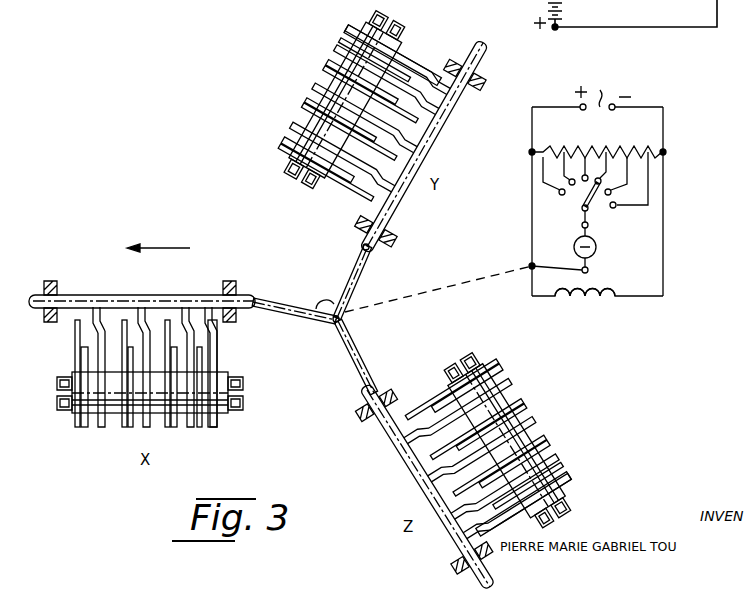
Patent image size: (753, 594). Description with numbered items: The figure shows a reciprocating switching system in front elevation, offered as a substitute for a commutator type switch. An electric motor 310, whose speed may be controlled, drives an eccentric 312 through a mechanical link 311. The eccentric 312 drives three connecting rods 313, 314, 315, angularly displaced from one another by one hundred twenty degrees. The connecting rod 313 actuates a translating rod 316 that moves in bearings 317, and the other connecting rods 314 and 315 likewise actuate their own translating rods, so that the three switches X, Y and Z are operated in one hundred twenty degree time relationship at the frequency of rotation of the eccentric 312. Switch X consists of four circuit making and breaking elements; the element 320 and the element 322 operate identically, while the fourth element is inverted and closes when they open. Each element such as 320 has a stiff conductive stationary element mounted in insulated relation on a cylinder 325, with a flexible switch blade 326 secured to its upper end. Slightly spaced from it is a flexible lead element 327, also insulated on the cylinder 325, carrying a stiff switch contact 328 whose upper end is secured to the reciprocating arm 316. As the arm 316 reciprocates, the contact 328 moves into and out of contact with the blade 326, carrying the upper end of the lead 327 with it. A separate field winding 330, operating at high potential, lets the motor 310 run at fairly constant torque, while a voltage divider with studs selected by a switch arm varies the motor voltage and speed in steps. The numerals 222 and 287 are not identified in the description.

The electric motor 310 is at (597, 242).
The mechanical link 311 is at (438, 289).
The eccentric 312 is at (331, 305).
The connecting rod 313 is at (280, 319).
The connecting rod 314 is at (357, 274).
The connecting rod 315 is at (358, 368).
The translating rod 316 is at (127, 299).
The bearings 317 is at (49, 281).
The circuit making and breaking element 320 is at (88, 428).
The circuit making and breaking element 322 is at (180, 426).
The cylinder 325 is at (120, 418).
The flexible switch blade 326 is at (75, 329).
The flexible lead element 327 is at (97, 432).
The switch contact 328 is at (93, 322).
The field winding 330 is at (590, 304).
The resistor 222 is at (626, 151).
The battery 287 is at (559, 26).